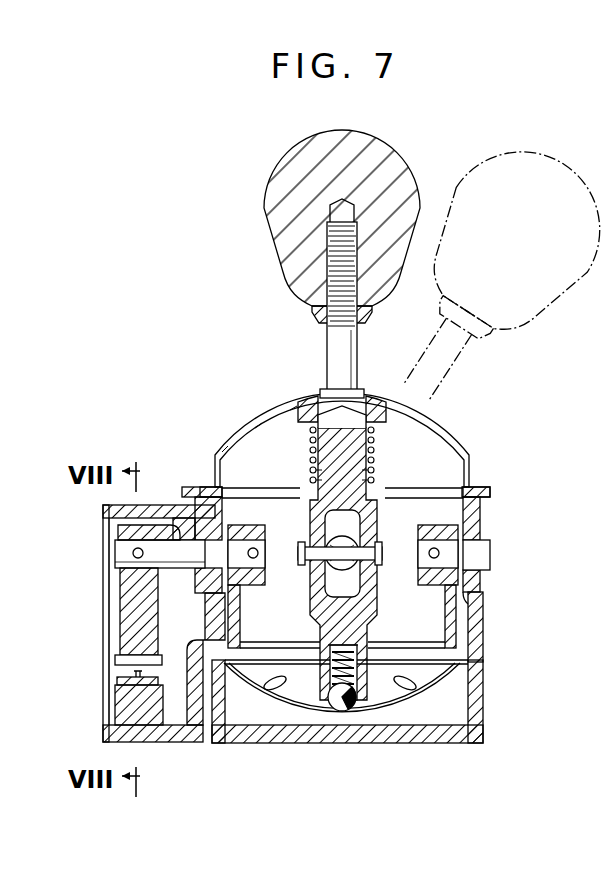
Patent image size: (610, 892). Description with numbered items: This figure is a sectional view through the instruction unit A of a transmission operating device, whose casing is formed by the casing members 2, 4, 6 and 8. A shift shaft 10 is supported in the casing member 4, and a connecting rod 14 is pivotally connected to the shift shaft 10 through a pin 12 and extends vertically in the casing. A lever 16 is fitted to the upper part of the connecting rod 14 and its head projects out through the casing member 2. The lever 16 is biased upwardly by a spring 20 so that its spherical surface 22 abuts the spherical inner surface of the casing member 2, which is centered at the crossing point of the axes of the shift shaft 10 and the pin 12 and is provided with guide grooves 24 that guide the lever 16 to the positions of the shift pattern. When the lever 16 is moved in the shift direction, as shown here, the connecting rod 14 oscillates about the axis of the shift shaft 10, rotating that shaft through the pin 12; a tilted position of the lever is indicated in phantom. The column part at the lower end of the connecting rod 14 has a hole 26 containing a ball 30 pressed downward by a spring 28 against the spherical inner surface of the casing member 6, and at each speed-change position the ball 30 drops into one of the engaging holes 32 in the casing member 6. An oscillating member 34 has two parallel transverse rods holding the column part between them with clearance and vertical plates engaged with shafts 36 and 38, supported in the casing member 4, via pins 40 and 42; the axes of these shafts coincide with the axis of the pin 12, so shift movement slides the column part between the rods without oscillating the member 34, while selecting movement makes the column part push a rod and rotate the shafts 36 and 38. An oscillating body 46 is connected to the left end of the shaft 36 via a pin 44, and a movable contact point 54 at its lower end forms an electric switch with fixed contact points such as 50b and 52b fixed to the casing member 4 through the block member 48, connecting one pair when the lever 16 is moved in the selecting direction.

The casing member 2 is at (236, 447).
The casing member 4 is at (487, 514).
The casing member 6 is at (485, 661).
The casing member 8 is at (483, 706).
The shift shaft 10 is at (350, 542).
The pin 12 is at (380, 558).
The connecting rod 14 is at (316, 510).
The lever 16 is at (328, 360).
The spring 20 is at (376, 449).
The spherical surface 22 is at (315, 397).
The guide grooves 24 is at (272, 412).
The hole 26 is at (356, 665).
The spring 28 is at (330, 664).
The ball 30 is at (344, 712).
The engaging holes 32 is at (275, 683).
The oscillating member 34 is at (483, 612).
The shaft 36 is at (122, 547).
The shaft 38 is at (491, 554).
The pin 40 is at (258, 556).
The pin 42 is at (434, 548).
The pin 44 is at (125, 558).
The oscillating body 46 is at (128, 606).
The block member 48 is at (152, 722).
The fixed contact point 50b is at (118, 681).
The fixed contact point 52b is at (118, 706).
The movable contact point 54 is at (116, 662).
The instruction unit A is at (470, 412).